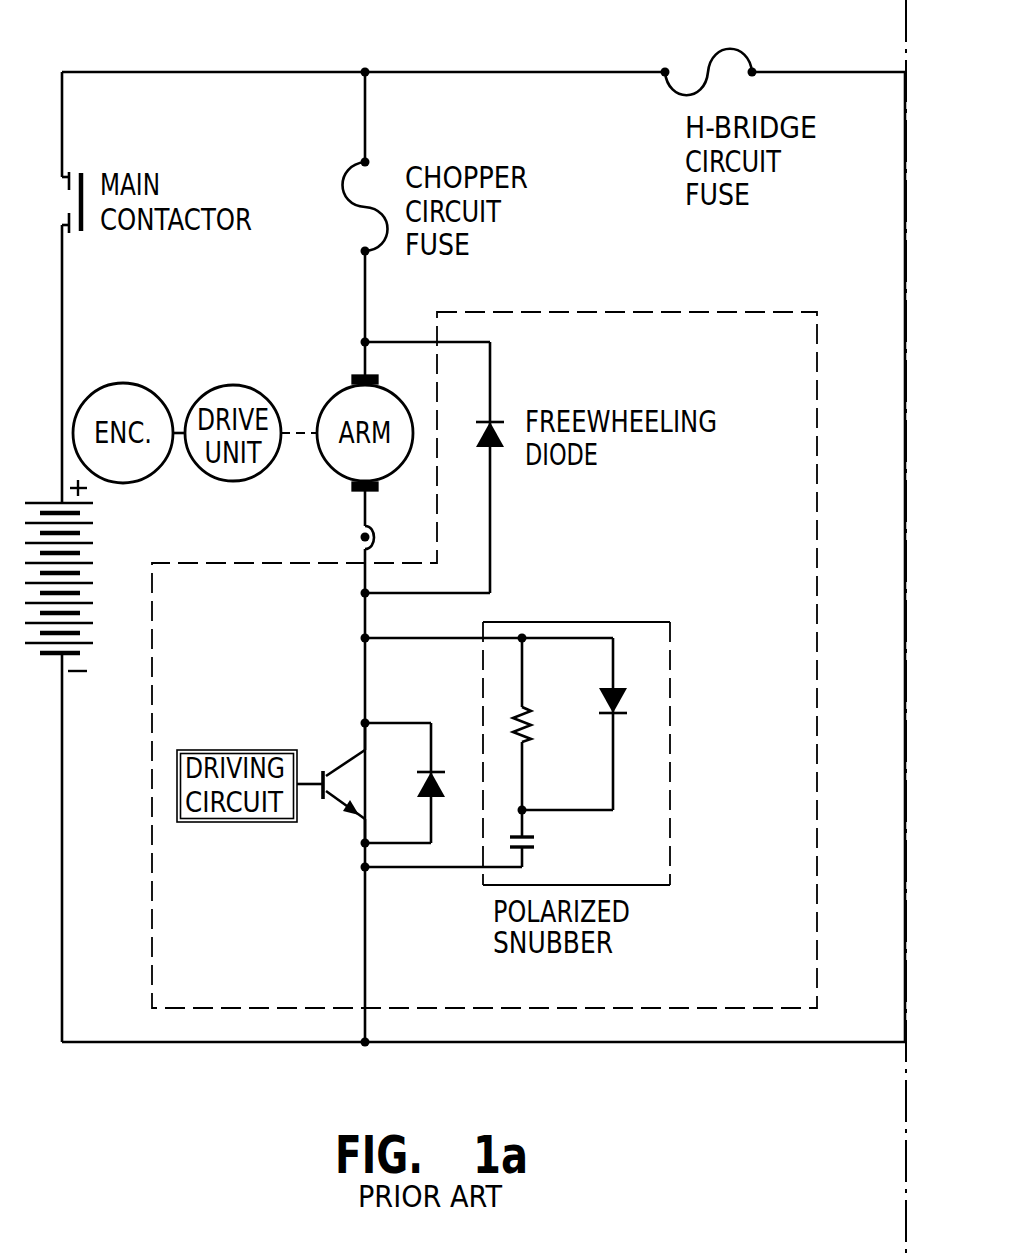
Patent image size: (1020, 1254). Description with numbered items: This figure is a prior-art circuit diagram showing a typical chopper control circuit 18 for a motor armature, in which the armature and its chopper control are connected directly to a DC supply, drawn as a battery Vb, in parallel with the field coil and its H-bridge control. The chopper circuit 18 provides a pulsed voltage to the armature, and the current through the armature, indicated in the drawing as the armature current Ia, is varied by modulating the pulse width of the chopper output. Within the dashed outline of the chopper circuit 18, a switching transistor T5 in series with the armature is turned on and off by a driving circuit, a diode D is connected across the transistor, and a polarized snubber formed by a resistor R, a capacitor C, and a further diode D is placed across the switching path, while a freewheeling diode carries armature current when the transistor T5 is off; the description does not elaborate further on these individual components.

The chopper circuit 18 is at (608, 312).
The chopper transistor T5 is at (346, 783).
The diode D is at (510, 740).
The snubber resistor R is at (535, 724).
The snubber capacitor C is at (540, 838).
The battery Vb is at (77, 575).
The armature current Ia is at (365, 537).